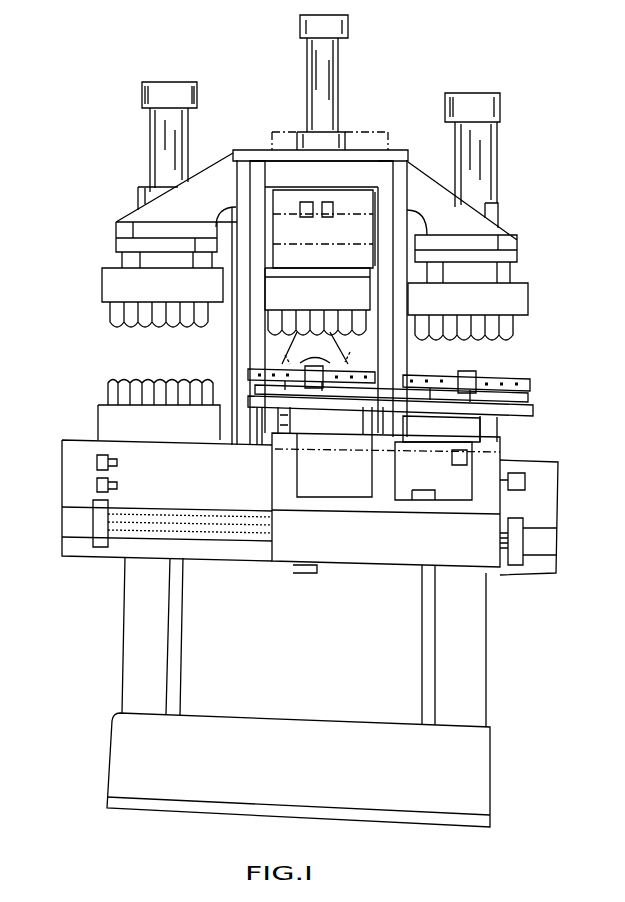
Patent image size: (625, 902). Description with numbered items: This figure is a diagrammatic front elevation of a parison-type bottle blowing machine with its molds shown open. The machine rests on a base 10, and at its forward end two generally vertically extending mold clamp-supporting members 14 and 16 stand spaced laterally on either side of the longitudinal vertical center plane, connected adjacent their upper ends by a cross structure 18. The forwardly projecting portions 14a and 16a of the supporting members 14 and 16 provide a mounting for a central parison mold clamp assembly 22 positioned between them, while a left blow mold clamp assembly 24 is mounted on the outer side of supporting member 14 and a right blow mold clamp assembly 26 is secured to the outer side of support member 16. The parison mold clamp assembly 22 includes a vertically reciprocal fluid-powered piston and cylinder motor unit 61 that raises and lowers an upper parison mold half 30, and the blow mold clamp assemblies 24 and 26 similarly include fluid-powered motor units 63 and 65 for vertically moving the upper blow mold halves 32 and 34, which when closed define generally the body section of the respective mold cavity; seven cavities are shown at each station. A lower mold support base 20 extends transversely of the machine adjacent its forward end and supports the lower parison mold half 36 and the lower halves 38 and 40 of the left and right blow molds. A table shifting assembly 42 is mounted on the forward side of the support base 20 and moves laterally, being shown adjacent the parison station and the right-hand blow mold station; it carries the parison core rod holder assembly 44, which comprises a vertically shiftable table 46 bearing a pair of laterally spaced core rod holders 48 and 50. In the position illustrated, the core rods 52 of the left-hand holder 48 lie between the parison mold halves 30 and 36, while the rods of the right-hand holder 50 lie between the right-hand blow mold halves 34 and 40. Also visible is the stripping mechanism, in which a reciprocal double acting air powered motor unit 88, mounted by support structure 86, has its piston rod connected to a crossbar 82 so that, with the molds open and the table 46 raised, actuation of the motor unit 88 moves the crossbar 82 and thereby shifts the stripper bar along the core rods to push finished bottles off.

The base 10 is at (483, 763).
The mold clamp-supporting member 14 is at (244, 446).
The forwardly projecting portion of supporting member 14 14a is at (262, 195).
The mold clamp-supporting member 16 is at (380, 430).
The forwardly projecting portion of supporting member 16 16a is at (392, 199).
The cross structure 18 is at (385, 172).
The lower mold support base 20 is at (70, 441).
The central parison mold clamp assembly 22 is at (322, 265).
The left blow mold clamp assembly 24 is at (113, 232).
The right blow mold clamp assembly 26 is at (495, 200).
The upper parison mold half 30 is at (312, 323).
The upper blow mold half 32 is at (130, 312).
The upper blow mold half 34 is at (511, 333).
The lower parison mold half 36 is at (250, 410).
The lower blow mold half 38 is at (112, 389).
The lower blow mold half 40 is at (515, 419).
The table shifting assembly 42 is at (445, 540).
The parison core rod holder assembly 44 is at (267, 486).
The vertically shiftable table 46 is at (533, 406).
The core rod holder 48 is at (246, 355).
The core rod holder 50 is at (522, 372).
The core rods 52 is at (495, 392).
The fluid-powered piston and cylinder motor unit 61 is at (330, 68).
The fluid-powered cylinder and piston motor unit 63 is at (176, 137).
The fluid-powered cylinder and piston motor unit 65 is at (478, 138).
The crossbar 82 is at (278, 368).
The support structure 86 is at (400, 356).
The reciprocal double acting air powered motor unit 88 is at (468, 371).